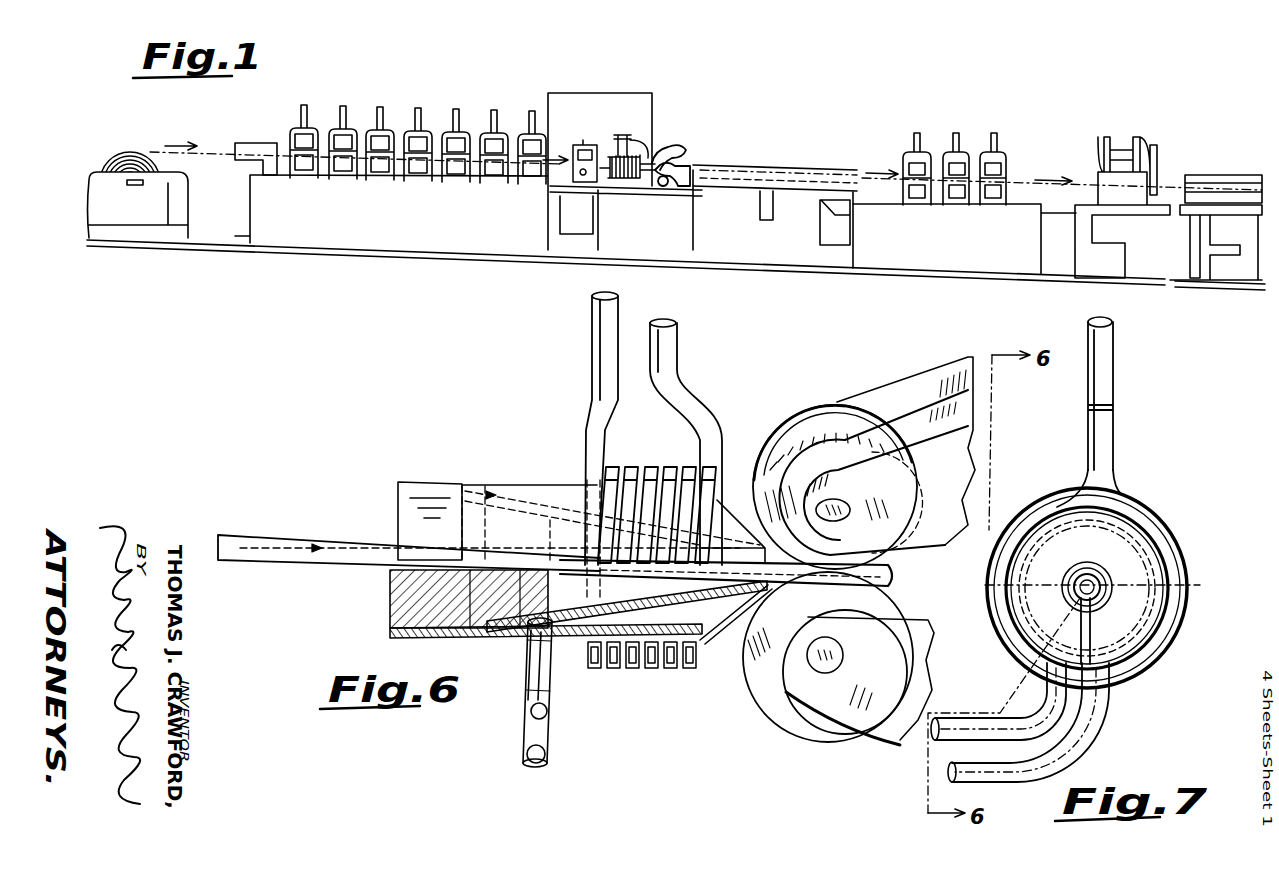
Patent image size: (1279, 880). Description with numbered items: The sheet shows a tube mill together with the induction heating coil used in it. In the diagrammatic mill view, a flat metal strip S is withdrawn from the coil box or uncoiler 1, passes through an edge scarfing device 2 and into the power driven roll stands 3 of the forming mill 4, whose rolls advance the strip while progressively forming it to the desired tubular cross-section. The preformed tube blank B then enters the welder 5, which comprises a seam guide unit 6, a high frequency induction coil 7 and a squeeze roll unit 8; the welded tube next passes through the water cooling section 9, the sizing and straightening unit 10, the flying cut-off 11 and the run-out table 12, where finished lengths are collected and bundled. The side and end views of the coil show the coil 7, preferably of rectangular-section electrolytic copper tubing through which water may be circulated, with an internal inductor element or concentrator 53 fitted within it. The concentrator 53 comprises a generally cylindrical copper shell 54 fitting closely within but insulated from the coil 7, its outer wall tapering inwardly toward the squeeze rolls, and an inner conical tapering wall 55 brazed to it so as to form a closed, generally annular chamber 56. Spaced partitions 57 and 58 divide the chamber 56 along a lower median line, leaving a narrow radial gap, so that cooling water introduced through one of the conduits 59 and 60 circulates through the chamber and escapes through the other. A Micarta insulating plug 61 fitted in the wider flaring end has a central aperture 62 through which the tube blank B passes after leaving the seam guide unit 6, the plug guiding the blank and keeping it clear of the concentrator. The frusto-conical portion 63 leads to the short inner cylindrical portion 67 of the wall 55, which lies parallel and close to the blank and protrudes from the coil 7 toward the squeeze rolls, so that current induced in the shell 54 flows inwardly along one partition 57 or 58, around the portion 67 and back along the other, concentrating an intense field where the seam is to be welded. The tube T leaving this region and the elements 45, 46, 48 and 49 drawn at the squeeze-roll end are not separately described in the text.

In FIG. 1, the coil box or uncoiler 1 is at (140, 220).
In FIG. 1, the edge scarfing device 2 is at (252, 150).
In FIG. 1, the power driven roll stands 3 is at (418, 126).
In FIG. 1, the forming mill 4 is at (405, 230).
In FIG. 1, the welder 5 is at (567, 100).
In FIG. 1, the seam guide unit 6 is at (580, 140).
In FIG. 1, the high frequency induction coil 7 is at (612, 180).
In FIG. 6, the high frequency induction coil 7 is at (655, 670).
In FIG. 7, the high frequency induction coil 7 is at (1189, 560).
In FIG. 1, the squeeze roll unit 8 is at (677, 141).
In FIG. 1, the water cooling section 9 is at (745, 168).
In FIG. 1, the sizing and straightening unit 10 is at (1001, 263).
In FIG. 1, the flying cut-off 11 is at (1155, 168).
In FIG. 1, the run-out table 12 is at (1215, 176).
In FIG. 1, the flat metal strip S is at (208, 149).
In FIG. 1, the tube blank B is at (560, 162).
In FIG. 6, the tube blank B is at (321, 546).
In FIG. 7, the tube blank B is at (1100, 592).
In FIG. 1, the tube T is at (688, 166).
In FIG. 6, the tube T is at (896, 576).
In FIG. 6, the upper roller 45 is at (793, 414).
In FIG. 6, the lower roller 46 is at (772, 717).
In FIG. 6, the upper guide plate 48 is at (968, 357).
In FIG. 6, the lower guide plate 49 is at (900, 738).
In FIG. 6, the internal inductor element (concentrator) 53 is at (505, 487).
In FIG. 6, the cylindrical copper shell 54 is at (516, 640).
In FIG. 6, the inner conical tapering wall 55 is at (692, 596).
In FIG. 6, the annular chamber 56 is at (642, 600).
In FIG. 6, the partition 57 is at (712, 642).
In FIG. 7, the partition 57 is at (1060, 628).
In FIG. 7, the partition 58 is at (1120, 652).
In FIG. 6, the conduit 59 is at (556, 676).
In FIG. 7, the conduit 59 is at (950, 740).
In FIG. 6, the conduit 60 is at (555, 740).
In FIG. 7, the conduit 60 is at (1112, 735).
In FIG. 6, the insulating plug 61 is at (430, 492).
In FIG. 6, the central aperture 62 is at (395, 581).
In FIG. 6, the frusto-conical portion 63 is at (720, 500).
In FIG. 7, the frusto-conical portion 63 is at (1118, 540).
In FIG. 6, the inner cylindrical shell portion 67 is at (722, 608).
In FIG. 7, the inner cylindrical shell portion 67 is at (1110, 578).